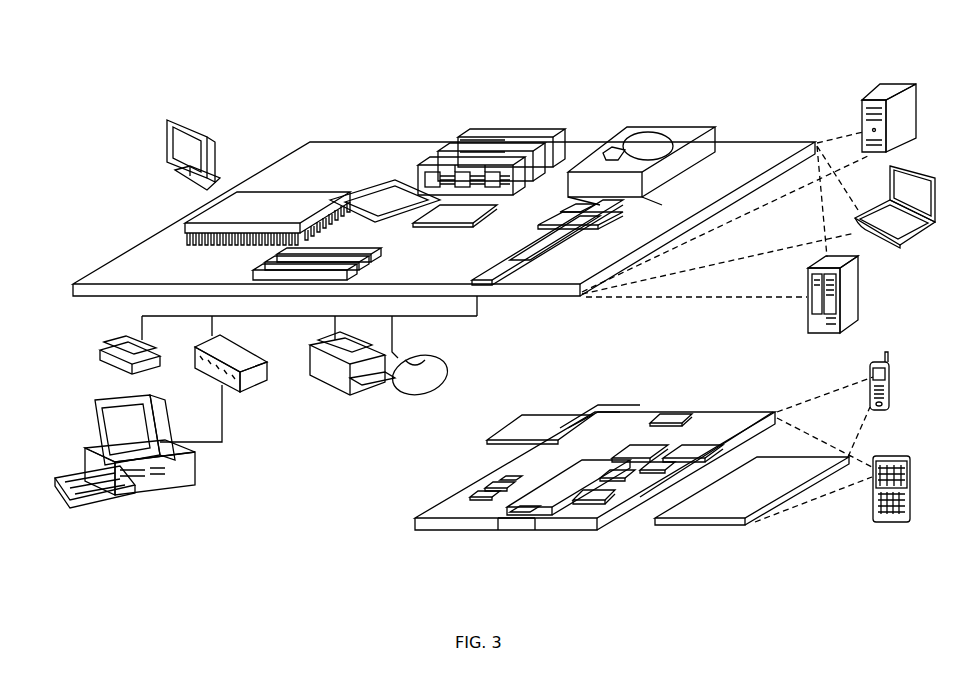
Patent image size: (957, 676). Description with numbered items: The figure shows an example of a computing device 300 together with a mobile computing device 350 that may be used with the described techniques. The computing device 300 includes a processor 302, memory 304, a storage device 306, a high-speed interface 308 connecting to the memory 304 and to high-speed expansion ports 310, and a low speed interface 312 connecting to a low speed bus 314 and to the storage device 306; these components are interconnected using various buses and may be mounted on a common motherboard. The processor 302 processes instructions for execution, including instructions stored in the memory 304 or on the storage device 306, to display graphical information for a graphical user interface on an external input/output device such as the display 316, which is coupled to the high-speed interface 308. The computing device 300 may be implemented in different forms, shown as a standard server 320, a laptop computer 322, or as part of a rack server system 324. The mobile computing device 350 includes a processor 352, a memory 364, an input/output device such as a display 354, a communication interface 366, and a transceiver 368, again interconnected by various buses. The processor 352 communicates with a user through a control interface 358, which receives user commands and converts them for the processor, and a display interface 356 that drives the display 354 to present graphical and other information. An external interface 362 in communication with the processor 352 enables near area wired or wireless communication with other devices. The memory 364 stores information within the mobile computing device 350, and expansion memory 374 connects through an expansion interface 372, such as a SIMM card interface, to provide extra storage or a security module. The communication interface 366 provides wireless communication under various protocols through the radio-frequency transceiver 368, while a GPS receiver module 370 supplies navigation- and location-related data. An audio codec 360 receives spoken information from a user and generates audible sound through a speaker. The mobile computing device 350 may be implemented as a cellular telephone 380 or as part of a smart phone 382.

The computing device 300 is at (143, 63).
The processor 302 is at (176, 224).
The memory 304 is at (498, 136).
The storage device 306 is at (644, 128).
The high-speed interface 308 is at (455, 227).
The high-speed expansion ports 310 is at (255, 273).
The low speed interface 312 is at (572, 214).
The low speed bus 314 is at (477, 281).
The display 316 is at (168, 130).
The standard server 320 is at (872, 92).
The laptop computer 322 is at (918, 238).
The rack server system 324 is at (858, 292).
The mobile computing device 350 is at (395, 548).
The processor 352 is at (545, 478).
The display 354 is at (730, 527).
The display interface 356 is at (595, 505).
The control interface 358 is at (617, 482).
The audio codec 360 is at (668, 470).
The external interface 362 is at (512, 532).
The memory 364 is at (483, 490).
The communication interface 366 is at (633, 440).
The transceiver 368 is at (703, 440).
The GPS receiver module 370 is at (672, 414).
The expansion interface 372 is at (596, 410).
The expansion memory 374 is at (518, 432).
The cellular telephone 380 is at (889, 388).
The smart phone 382 is at (900, 457).